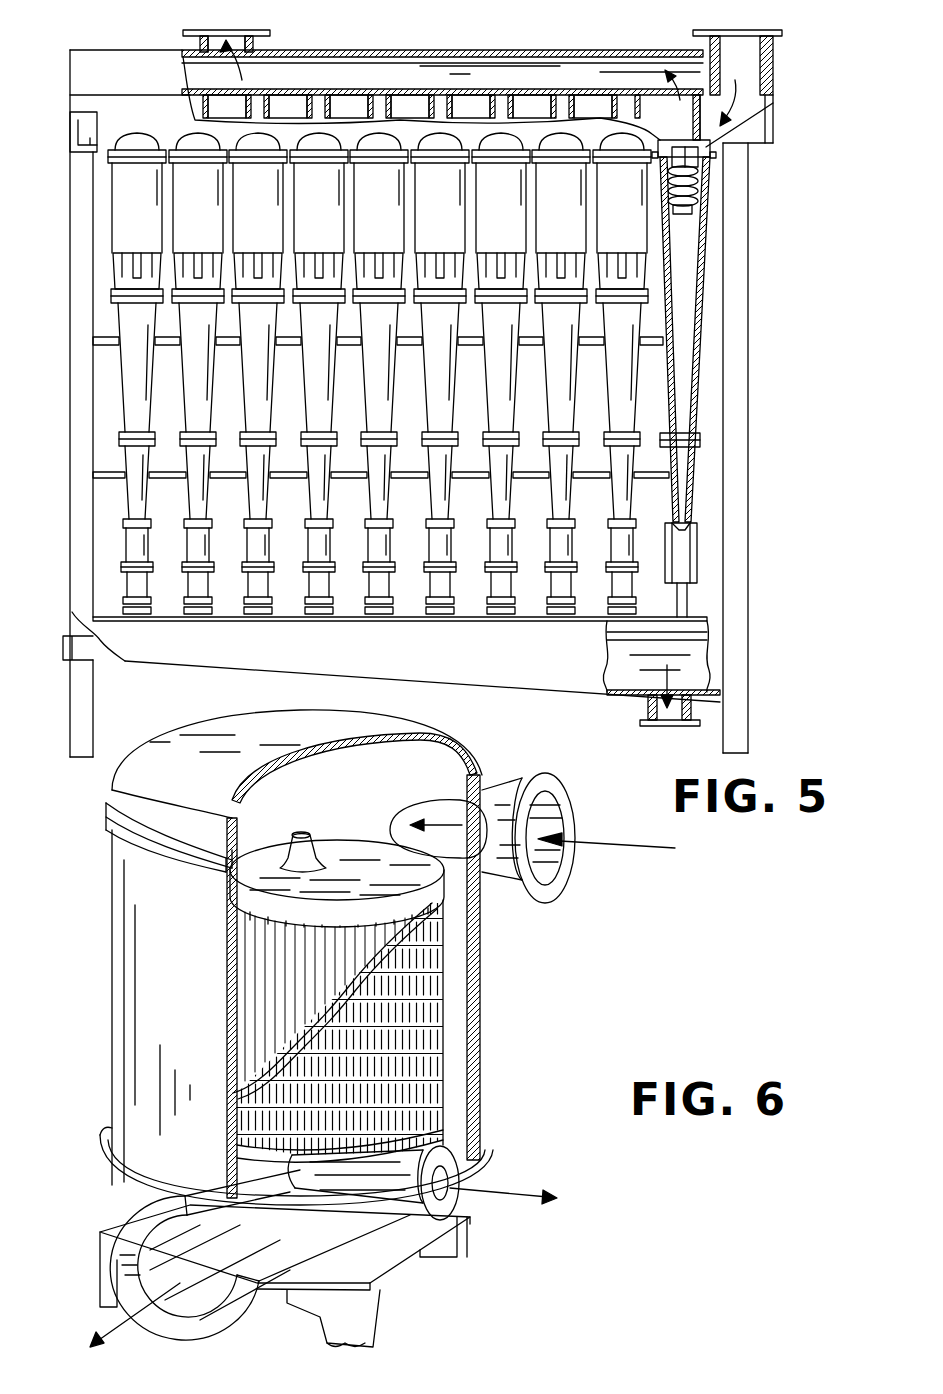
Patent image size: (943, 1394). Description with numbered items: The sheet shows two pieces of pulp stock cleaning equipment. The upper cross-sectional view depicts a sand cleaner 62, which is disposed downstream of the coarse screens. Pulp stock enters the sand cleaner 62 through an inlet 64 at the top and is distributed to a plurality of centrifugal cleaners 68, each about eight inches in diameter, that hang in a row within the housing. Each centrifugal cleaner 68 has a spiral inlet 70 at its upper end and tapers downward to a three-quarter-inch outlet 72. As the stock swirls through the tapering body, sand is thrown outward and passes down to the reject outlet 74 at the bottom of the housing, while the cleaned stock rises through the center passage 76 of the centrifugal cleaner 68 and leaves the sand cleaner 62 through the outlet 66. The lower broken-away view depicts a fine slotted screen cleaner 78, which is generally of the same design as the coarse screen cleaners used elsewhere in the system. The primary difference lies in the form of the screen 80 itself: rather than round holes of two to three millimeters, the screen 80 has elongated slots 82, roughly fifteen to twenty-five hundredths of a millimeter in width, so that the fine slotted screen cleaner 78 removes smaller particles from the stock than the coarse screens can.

In FIG. 5, the sand cleaner 62 is at (424, 52).
In FIG. 5, the inlet 64 is at (726, 34).
In FIG. 5, the outlet 66 is at (231, 44).
In FIG. 5, the centrifugal cleaner 68 is at (708, 247).
In FIG. 5, the spiral inlet 70 is at (698, 182).
In FIG. 5, the outlet 72 is at (682, 548).
In FIG. 5, the reject outlet 74 is at (662, 714).
In FIG. 5, the center passage 76 is at (683, 150).
In FIG. 6, the fine slotted screen cleaner 78 is at (490, 700).
In FIG. 6, the screen 80 is at (437, 997).
In FIG. 6, the elongated slots 82 is at (430, 1062).